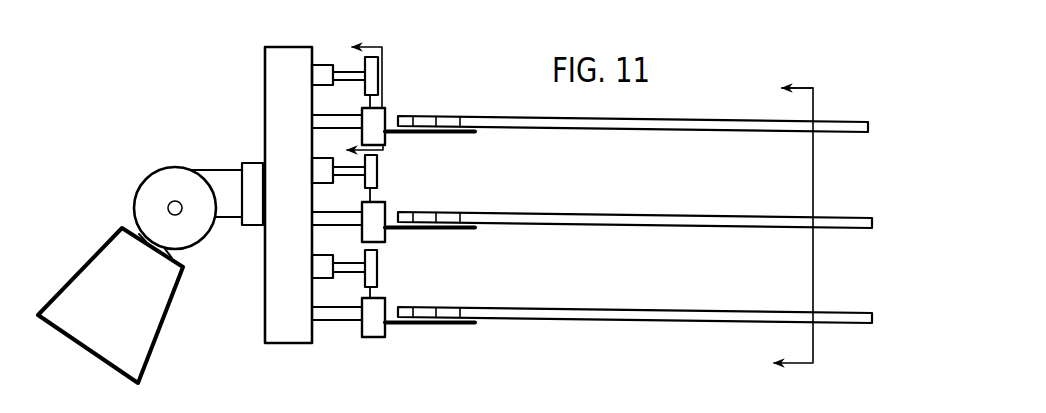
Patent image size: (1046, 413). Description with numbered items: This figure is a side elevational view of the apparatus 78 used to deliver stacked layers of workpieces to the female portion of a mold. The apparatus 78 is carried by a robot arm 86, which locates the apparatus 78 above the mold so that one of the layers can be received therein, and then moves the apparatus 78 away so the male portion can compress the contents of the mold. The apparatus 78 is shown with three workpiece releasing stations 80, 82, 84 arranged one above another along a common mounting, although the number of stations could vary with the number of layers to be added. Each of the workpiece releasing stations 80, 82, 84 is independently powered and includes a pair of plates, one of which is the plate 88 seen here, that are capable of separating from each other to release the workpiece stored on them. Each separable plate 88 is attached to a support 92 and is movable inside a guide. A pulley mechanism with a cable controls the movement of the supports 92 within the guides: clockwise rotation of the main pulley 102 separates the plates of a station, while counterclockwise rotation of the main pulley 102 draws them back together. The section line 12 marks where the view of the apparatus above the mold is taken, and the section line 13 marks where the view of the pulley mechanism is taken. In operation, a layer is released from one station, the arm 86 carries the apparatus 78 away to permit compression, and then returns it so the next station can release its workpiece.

The section line 12— 12 is at (775, 227).
The section line 13— 13 is at (351, 98).
The apparatus 78 is at (238, 123).
The workpiece releasing station 80 is at (507, 109).
The workpiece releasing station 82 is at (567, 209).
The workpiece releasing station 84 is at (557, 306).
The robot arm 86 is at (157, 307).
The plate 88 is at (670, 132).
The support 92 is at (450, 134).
The main pulley 102 is at (378, 93).